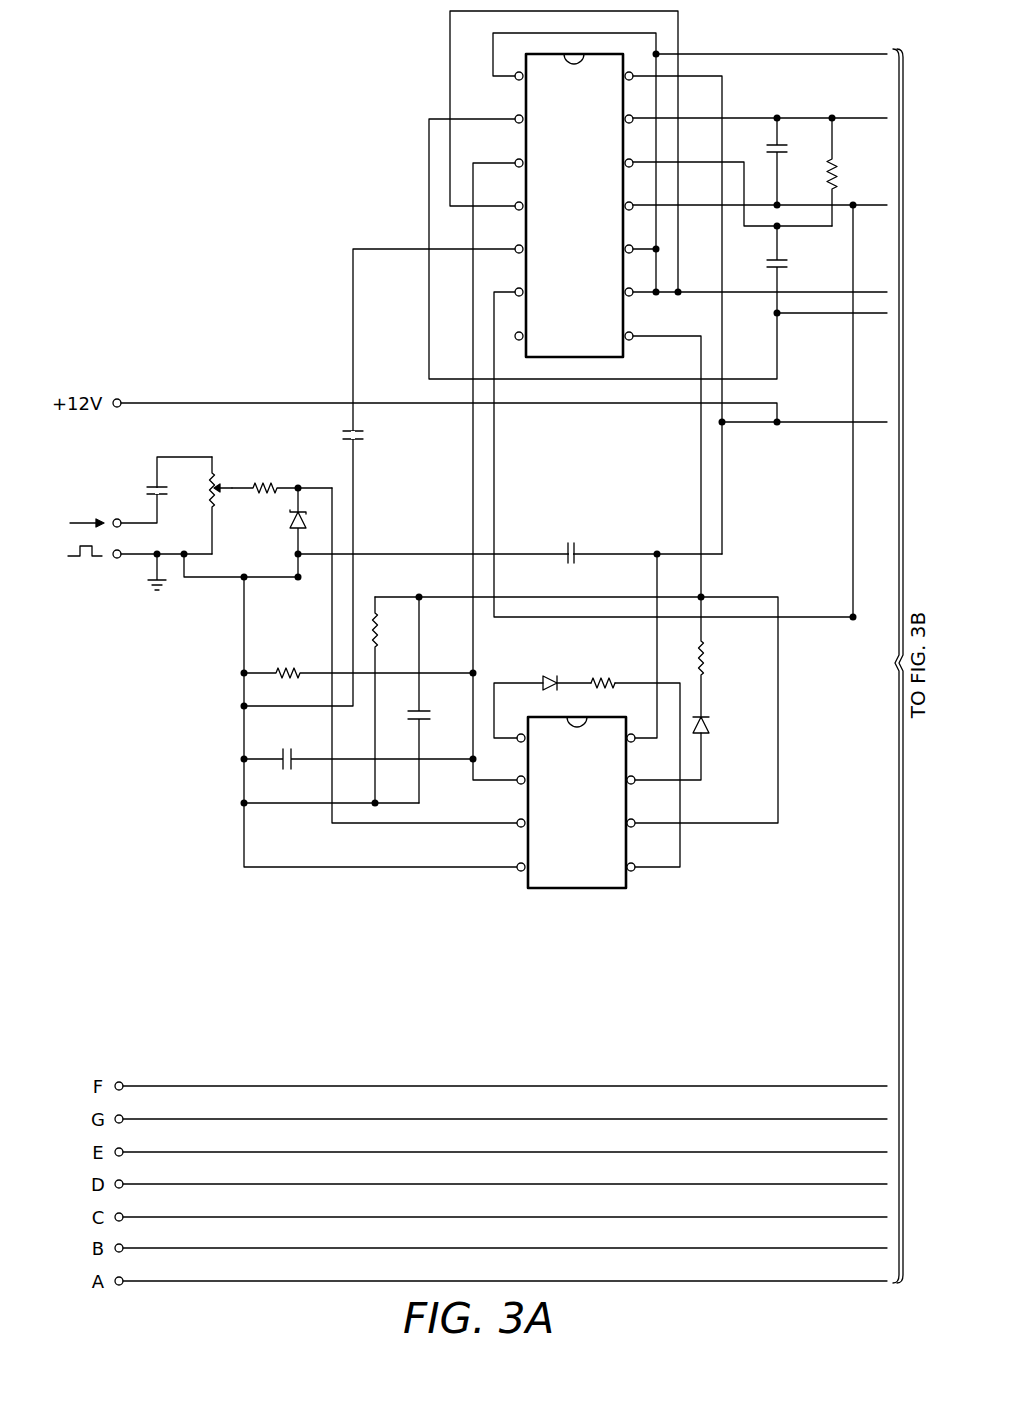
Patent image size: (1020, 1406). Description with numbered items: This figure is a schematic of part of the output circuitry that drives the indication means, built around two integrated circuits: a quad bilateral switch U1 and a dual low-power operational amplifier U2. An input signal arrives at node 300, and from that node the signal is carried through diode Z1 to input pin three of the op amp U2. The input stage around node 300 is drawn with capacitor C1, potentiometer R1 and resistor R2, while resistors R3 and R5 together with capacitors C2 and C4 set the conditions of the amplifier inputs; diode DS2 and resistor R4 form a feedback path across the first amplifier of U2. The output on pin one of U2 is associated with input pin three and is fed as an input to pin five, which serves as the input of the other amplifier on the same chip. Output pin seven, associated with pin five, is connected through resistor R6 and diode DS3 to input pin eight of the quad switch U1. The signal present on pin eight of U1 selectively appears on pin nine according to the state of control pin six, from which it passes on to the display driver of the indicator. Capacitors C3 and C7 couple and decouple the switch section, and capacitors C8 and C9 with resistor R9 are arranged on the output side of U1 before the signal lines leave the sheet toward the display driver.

The node 300 is at (116, 559).
The CD4066 quad bilateral switch U1 is at (574, 205).
The LM358 dual op-amp U2 is at (576, 802).
The capacitor C1 is at (143, 490).
The capacitor C2 is at (358, 749).
The capacitor C3 is at (571, 542).
The capacitor C4 is at (434, 700).
The capacitor C7 is at (367, 435).
The capacitor C8 is at (792, 269).
The capacitor C9 is at (792, 161).
The potentiometer R1 is at (207, 505).
The resistor R2 is at (282, 476).
The resistor R3 is at (358, 661).
The resistor R4 is at (603, 670).
The resistor R5 is at (391, 700).
The resistor R6 is at (717, 656).
The resistor R9 is at (847, 172).
The diode Z1 is at (286, 521).
The diode DS2 is at (550, 671).
The diode DS3 is at (722, 725).